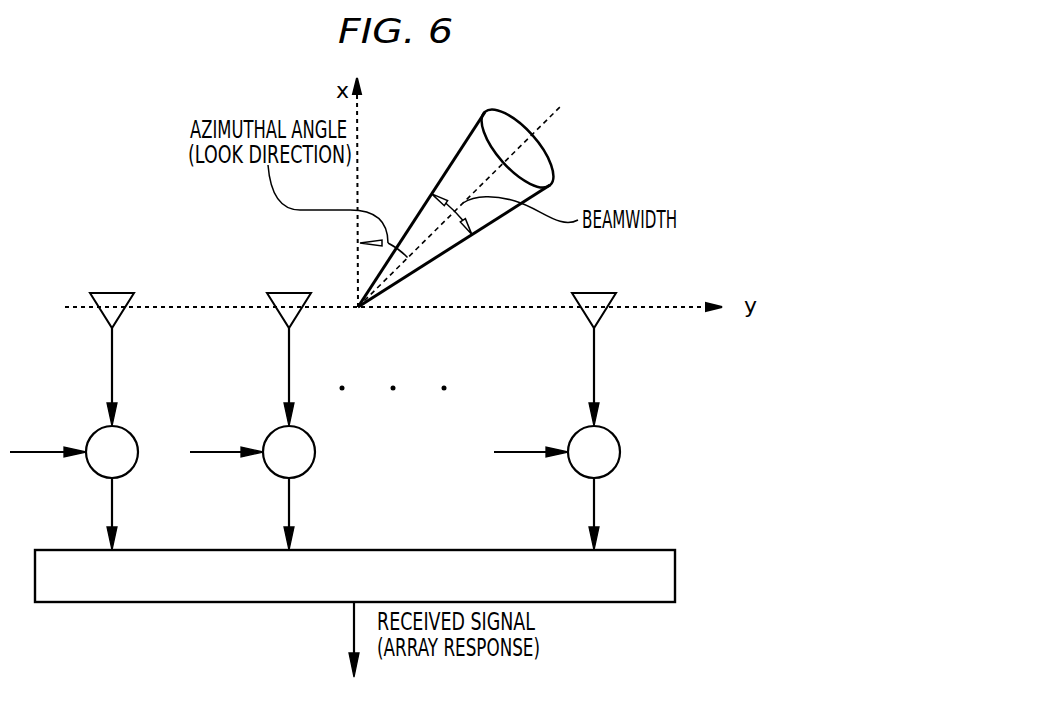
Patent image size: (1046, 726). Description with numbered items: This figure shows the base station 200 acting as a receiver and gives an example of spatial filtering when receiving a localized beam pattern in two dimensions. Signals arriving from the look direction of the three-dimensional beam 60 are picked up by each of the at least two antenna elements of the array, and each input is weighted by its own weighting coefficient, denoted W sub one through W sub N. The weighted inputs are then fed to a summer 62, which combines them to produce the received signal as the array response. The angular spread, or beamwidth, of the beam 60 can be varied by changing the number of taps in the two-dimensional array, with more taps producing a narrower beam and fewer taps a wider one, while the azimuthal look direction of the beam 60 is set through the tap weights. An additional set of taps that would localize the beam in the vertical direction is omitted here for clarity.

The three-dimensional beam 60 is at (453, 247).
The summer 62 is at (675, 578).
The base station 200 is at (442, 465).